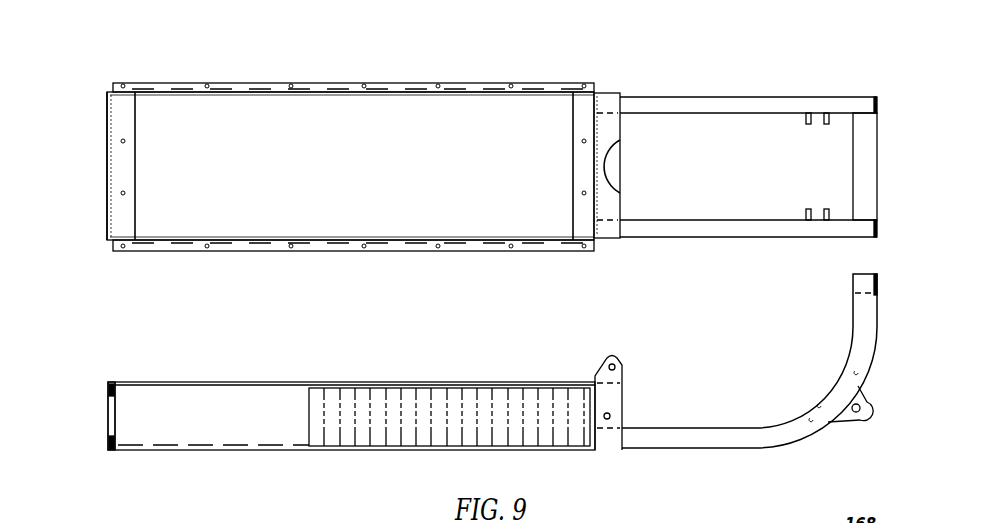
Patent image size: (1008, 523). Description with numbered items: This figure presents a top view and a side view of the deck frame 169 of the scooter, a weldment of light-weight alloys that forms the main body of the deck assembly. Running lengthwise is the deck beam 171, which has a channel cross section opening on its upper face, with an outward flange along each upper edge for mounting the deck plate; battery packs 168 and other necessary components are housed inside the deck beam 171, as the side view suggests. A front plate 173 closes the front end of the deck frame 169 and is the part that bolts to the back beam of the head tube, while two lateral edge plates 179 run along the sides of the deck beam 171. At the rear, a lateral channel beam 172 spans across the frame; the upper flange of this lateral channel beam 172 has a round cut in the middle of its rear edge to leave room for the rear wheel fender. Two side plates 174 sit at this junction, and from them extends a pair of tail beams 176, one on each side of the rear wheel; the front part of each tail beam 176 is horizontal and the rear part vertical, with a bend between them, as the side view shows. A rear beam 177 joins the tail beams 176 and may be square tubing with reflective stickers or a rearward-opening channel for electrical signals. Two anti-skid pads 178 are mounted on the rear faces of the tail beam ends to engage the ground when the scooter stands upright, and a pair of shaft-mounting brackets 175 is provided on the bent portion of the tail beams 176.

The battery packs 168 is at (358, 410).
The deck frame 169 is at (290, 58).
The deck beam 171 is at (355, 251).
The lateral channel beam 172 is at (622, 206).
The front plate 173 is at (107, 167).
The side plates 174 is at (608, 92).
The shaft-mounting brackets 175 is at (866, 418).
The tail beams 176 is at (748, 97).
The rear beam 177 is at (878, 165).
The anti-skid pads 178 is at (878, 103).
The lateral edge plates 179 is at (135, 190).